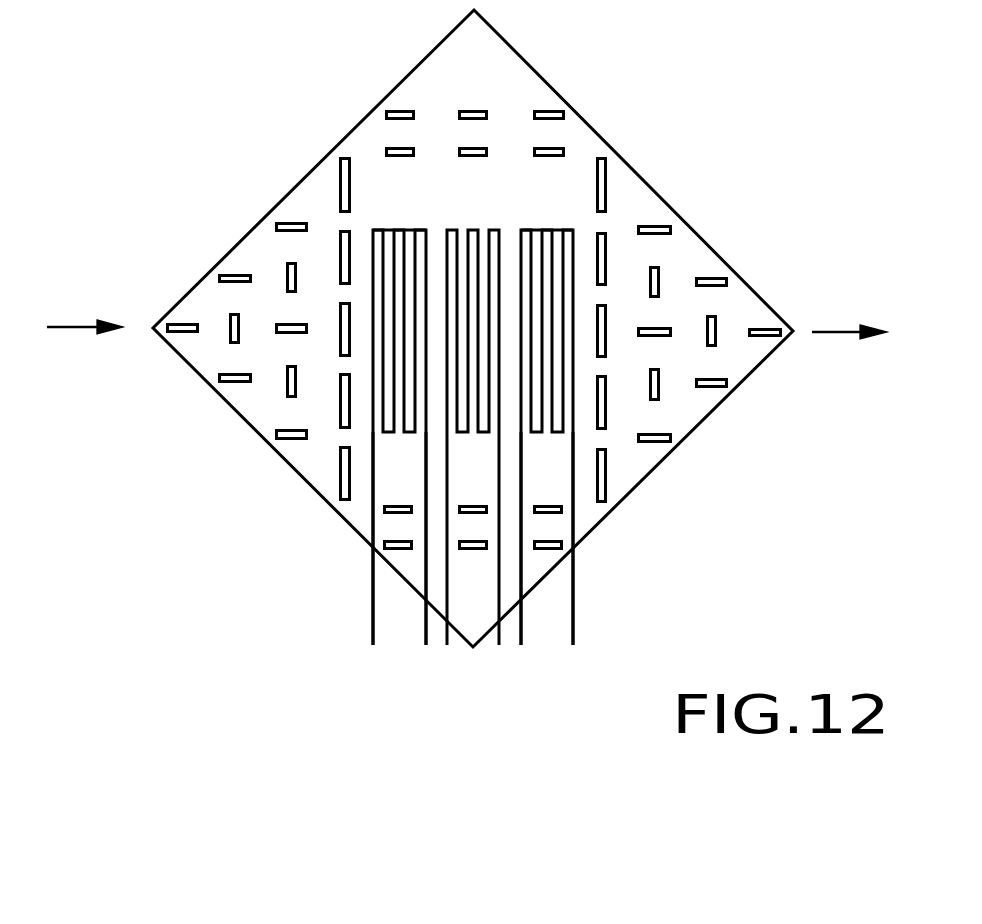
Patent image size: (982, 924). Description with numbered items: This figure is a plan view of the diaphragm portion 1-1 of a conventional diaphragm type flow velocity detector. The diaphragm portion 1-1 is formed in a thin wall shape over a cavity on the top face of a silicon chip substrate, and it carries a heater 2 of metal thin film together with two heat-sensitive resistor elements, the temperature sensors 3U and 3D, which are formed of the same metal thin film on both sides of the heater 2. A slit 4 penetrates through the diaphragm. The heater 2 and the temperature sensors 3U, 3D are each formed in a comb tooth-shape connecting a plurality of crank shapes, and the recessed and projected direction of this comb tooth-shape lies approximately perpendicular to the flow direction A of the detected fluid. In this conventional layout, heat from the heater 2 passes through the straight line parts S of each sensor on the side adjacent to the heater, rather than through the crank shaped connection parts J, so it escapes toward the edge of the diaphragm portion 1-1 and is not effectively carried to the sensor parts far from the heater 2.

The diaphragm portion 1-1 is at (690, 257).
The flow direction A is at (467, 312).
The slit 4 is at (240, 380).
The heat-sensitive resistor element 3U is at (398, 230).
The heater 2 is at (475, 230).
The heat-sensitive resistor element 3D is at (525, 230).
The crank shaped connection part J is at (418, 230).
The straight line part S is at (426, 386).